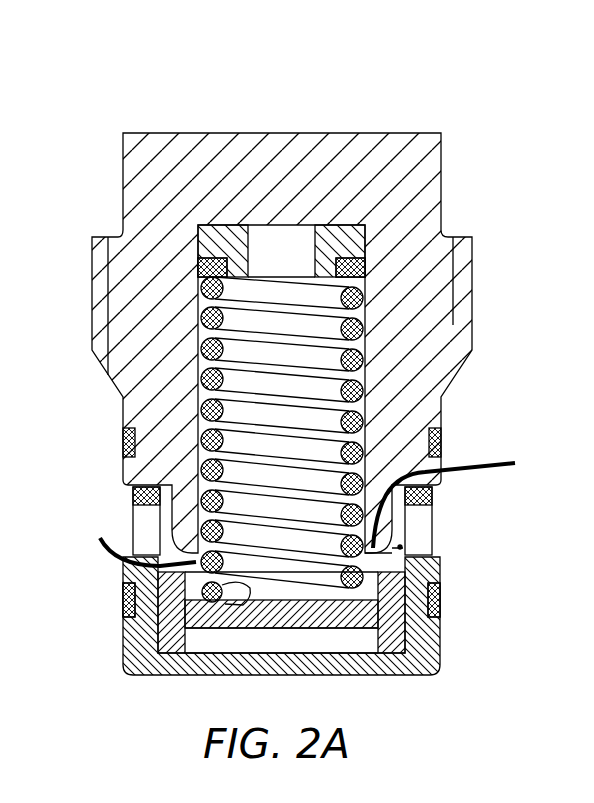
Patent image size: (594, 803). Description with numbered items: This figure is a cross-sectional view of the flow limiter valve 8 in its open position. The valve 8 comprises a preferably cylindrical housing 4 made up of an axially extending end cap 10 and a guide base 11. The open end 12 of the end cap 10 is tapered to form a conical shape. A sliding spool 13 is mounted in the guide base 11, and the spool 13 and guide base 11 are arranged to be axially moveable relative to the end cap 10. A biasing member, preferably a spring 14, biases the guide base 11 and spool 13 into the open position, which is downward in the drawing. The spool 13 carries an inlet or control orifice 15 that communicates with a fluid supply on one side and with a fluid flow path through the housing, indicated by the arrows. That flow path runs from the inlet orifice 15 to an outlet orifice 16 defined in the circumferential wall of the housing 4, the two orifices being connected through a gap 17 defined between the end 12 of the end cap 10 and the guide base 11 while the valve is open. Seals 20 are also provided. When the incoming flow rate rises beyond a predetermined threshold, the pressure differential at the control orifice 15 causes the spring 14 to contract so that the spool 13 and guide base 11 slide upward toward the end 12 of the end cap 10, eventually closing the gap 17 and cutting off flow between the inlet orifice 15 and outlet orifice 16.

The valve 8 is at (482, 114).
The housing 4 is at (82, 358).
The end cap 10 is at (127, 275).
The spring 14 is at (350, 312).
The open end of the end cap 12 is at (315, 511).
The outlet orifice 16 is at (430, 520).
The seals 20 is at (440, 560).
The guide base 11 is at (125, 670).
The sliding spool 13 is at (230, 608).
The inlet orifice 15 is at (283, 617).
The gap 17 is at (446, 584).